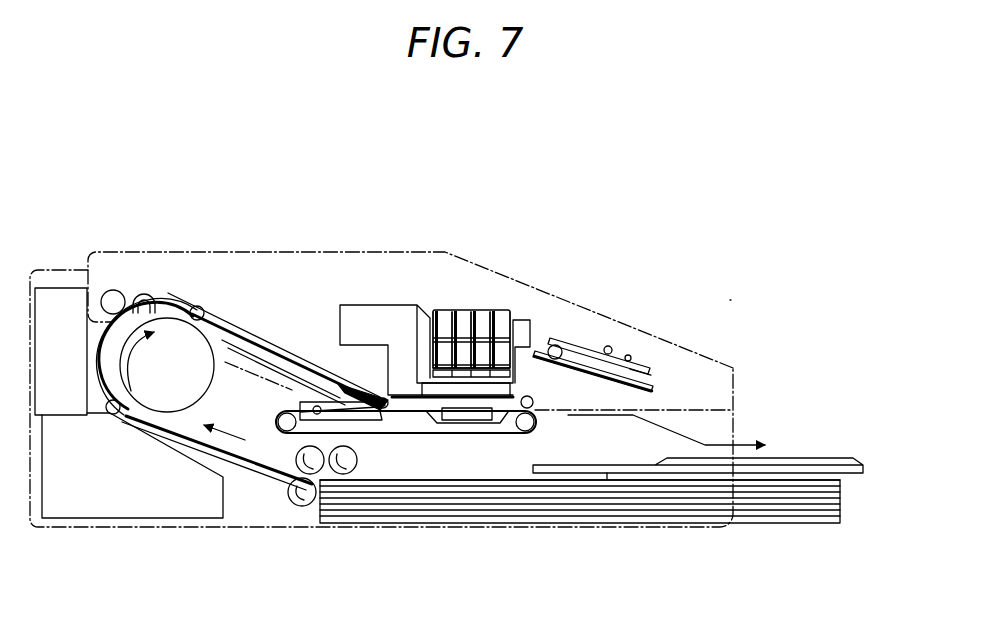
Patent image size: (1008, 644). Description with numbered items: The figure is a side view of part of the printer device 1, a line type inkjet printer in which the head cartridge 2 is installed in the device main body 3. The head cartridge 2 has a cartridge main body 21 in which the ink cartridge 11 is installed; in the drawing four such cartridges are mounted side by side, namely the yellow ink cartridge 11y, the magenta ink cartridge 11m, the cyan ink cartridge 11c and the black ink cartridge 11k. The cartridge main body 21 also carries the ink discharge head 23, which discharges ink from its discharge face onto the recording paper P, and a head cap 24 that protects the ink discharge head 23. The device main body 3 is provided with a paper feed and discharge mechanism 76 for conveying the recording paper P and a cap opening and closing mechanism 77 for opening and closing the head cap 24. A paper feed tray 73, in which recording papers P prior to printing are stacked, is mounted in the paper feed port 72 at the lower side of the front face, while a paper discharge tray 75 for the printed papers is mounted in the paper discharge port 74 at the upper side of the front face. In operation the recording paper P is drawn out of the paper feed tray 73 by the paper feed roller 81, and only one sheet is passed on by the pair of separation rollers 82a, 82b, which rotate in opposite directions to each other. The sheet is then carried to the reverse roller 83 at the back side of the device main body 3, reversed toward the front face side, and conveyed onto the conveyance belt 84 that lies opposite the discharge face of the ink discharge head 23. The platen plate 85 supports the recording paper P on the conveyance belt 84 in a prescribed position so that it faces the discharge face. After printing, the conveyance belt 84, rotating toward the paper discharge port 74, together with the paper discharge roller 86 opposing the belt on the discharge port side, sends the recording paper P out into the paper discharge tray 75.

The printer device 1 is at (728, 206).
The head cartridge 2 is at (350, 317).
The device main body 3 is at (102, 527).
The ink cartridge 11 is at (540, 178).
The yellow ink cartridge 11y is at (443, 311).
The magenta ink cartridge 11m is at (456, 311).
The cyan ink cartridge 11c is at (474, 311).
The black ink cartridge 11k is at (494, 311).
The cartridge main body 21 is at (519, 366).
The ink discharge head 23 is at (531, 390).
The head cap 24 is at (658, 379).
The paper feed port 72 is at (745, 483).
The paper feed tray 73 is at (845, 497).
The paper discharge port 74 is at (737, 422).
The paper discharge tray 75 is at (836, 458).
The paper feed and discharge mechanism 76 is at (221, 312).
The cap opening and closing mechanism 77 is at (581, 326).
The paper feed roller 81 is at (360, 462).
The separation roller 82a is at (313, 497).
The separation roller 82b is at (283, 457).
The reverse roller 83 is at (162, 402).
The conveyance belt 84 is at (443, 434).
The platen plate 85 is at (477, 418).
The paper discharge roller 86 is at (532, 412).
The recording paper P is at (810, 503).